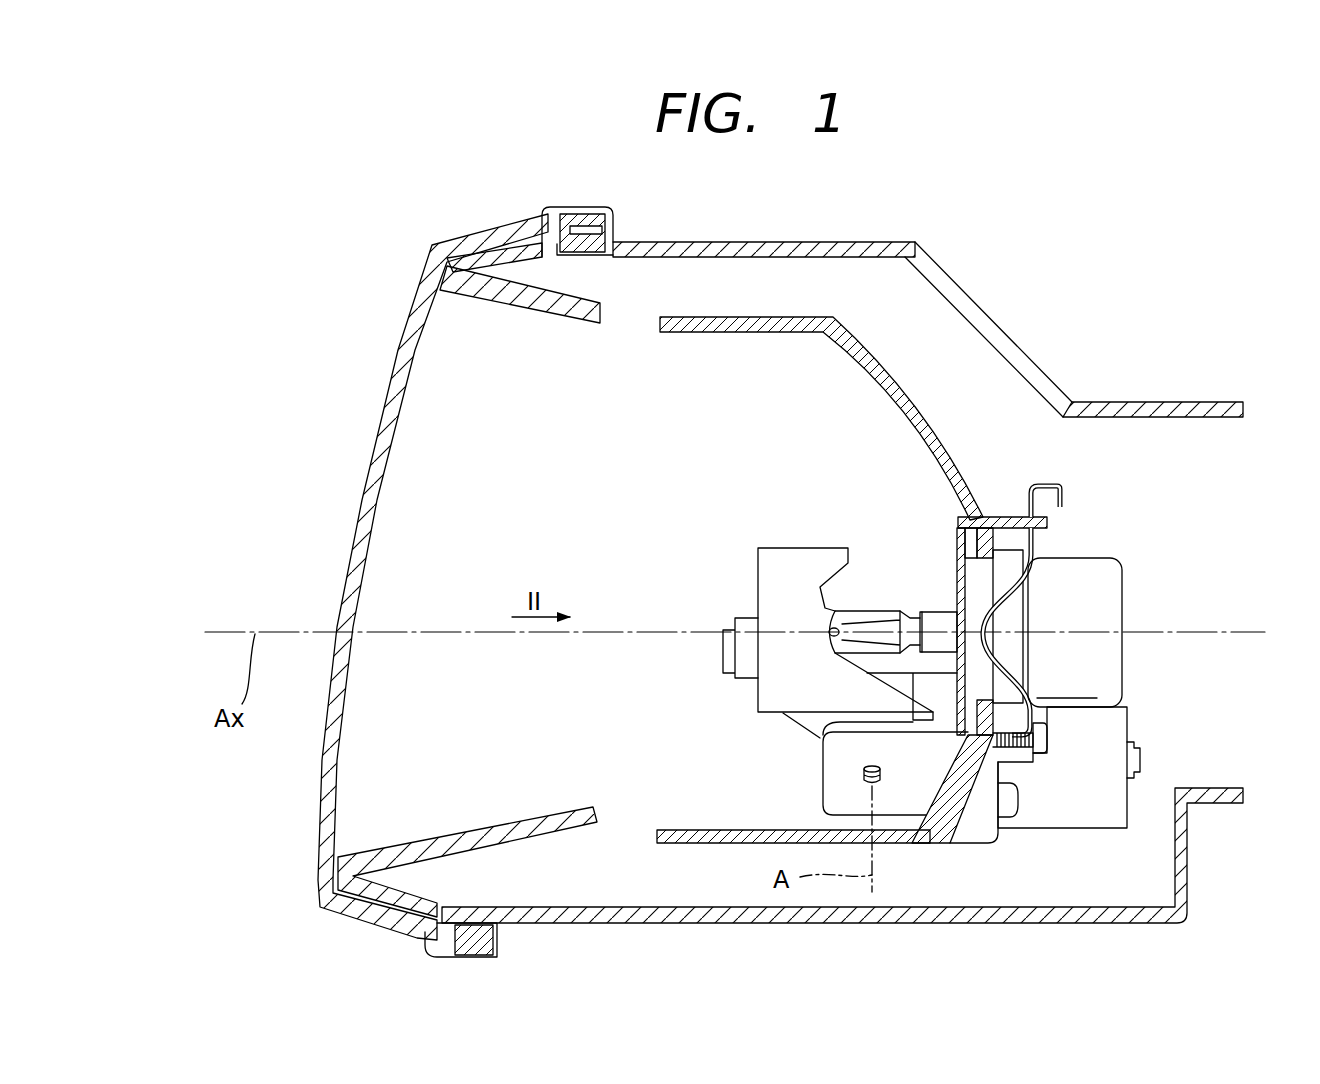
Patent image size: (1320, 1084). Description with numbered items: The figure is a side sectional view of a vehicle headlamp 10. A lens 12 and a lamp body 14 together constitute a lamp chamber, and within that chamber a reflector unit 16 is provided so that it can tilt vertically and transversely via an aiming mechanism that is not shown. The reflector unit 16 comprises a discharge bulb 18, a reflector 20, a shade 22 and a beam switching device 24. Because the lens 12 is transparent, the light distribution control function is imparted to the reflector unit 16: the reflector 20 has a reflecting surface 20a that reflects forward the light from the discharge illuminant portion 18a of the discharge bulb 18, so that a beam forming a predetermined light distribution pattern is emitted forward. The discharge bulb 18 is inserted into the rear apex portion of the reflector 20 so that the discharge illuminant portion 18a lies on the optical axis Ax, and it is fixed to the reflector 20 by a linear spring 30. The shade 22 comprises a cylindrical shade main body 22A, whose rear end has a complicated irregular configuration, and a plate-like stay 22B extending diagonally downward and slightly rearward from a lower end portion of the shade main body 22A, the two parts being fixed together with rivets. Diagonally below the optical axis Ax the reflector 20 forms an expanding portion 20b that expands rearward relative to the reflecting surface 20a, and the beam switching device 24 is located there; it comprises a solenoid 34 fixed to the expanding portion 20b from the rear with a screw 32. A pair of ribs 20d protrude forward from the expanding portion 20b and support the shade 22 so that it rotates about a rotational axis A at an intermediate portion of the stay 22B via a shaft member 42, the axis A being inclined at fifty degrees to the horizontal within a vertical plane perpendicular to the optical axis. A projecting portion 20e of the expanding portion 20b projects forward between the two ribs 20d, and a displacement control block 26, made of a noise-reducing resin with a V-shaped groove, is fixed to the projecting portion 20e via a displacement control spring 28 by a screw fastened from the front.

The vehicle headlamp 10 is at (747, 582).
The lens 12 is at (372, 424).
The lamp body 14 is at (1010, 327).
The reflector unit 16 is at (608, 414).
The discharge bulb 18 is at (889, 572).
The discharge illuminant portion 18a is at (836, 627).
The reflector 20 is at (875, 610).
The reflecting surface 20a is at (888, 413).
The expanding portion 20b is at (970, 840).
The rib 20d is at (842, 767).
The projecting portion 20e is at (958, 702).
The shade 22 is at (788, 629).
The shade main body 22A is at (770, 600).
The stay 22B is at (810, 725).
The beam switching device 24 is at (1165, 741).
The displacement control block 26 is at (913, 690).
The displacement control spring 28 is at (943, 700).
The linear spring 30 is at (1062, 495).
The screw 32 is at (1012, 798).
The solenoid 34 is at (1066, 803).
The shaft member 42 is at (866, 785).